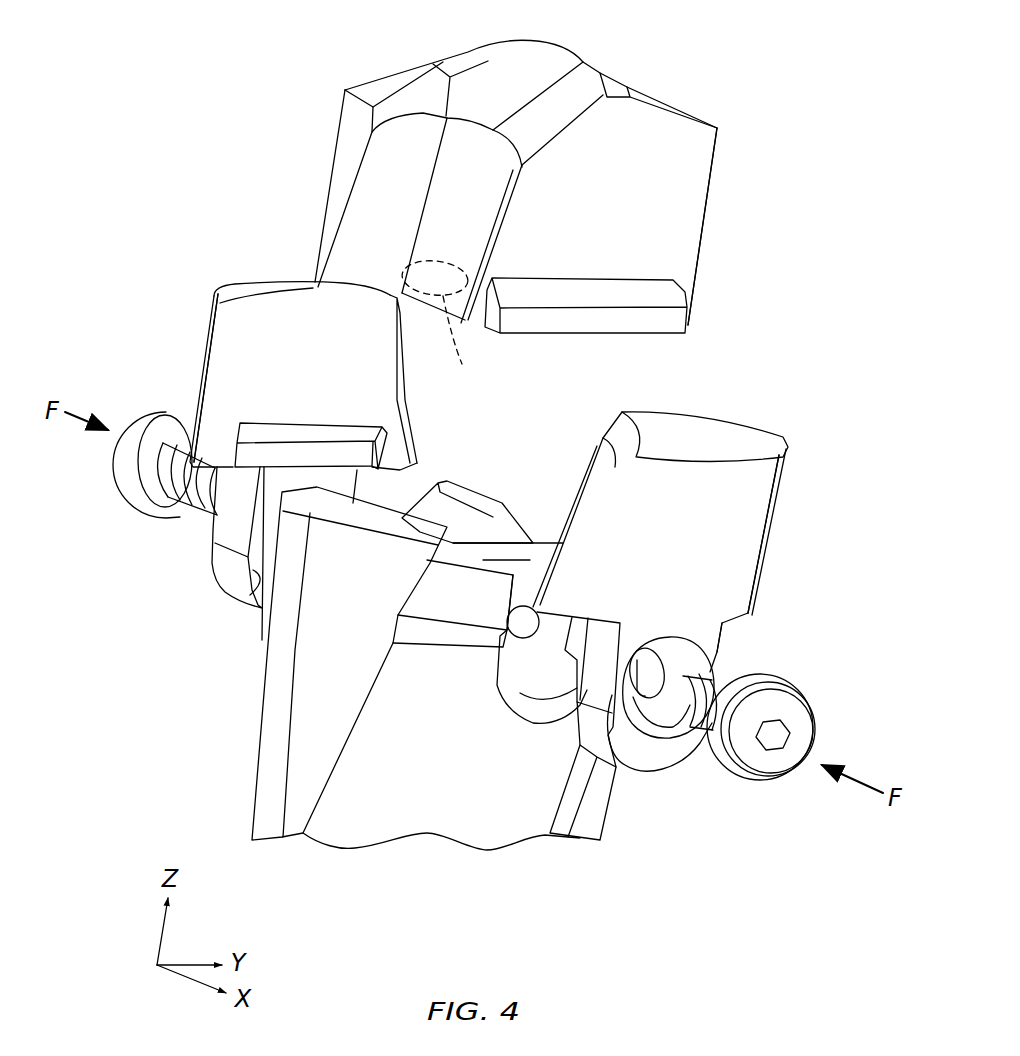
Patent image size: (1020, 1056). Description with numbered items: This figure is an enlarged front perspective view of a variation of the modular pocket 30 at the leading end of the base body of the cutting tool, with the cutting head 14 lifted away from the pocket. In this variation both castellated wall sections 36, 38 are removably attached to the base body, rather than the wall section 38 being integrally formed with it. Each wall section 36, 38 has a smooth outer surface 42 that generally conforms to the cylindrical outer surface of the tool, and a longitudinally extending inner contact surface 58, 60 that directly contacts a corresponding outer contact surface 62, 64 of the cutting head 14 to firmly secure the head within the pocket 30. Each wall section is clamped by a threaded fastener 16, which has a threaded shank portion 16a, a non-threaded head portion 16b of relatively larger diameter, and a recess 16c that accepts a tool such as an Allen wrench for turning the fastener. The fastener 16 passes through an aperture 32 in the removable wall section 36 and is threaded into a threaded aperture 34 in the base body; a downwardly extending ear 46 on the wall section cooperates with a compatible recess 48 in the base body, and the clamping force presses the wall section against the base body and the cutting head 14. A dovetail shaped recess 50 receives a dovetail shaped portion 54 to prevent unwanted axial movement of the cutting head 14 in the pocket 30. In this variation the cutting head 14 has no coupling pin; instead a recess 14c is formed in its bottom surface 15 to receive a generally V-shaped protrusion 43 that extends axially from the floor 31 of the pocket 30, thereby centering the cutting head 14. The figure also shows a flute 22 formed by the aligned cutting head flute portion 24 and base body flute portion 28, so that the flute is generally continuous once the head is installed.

The cutting head 14 is at (300, 150).
The recess 14c is at (462, 364).
The bottom surface 15 is at (408, 297).
The threaded fastener 16 is at (120, 410).
The threaded shank portion 16a is at (217, 473).
The non-threaded head portion 16b is at (132, 503).
The recess 16c is at (792, 735).
The flute 22 is at (318, 667).
The cutting head flute portion 24 is at (385, 222).
The base body flute portion 28 is at (310, 707).
The modular pocket 30 is at (598, 392).
The floor 31 is at (546, 548).
The aperture 32 is at (728, 655).
The threaded aperture 34 is at (526, 642).
The removable wall section 36 is at (782, 545).
The wall section 38 is at (196, 298).
The smooth outer surface 42 is at (740, 498).
The protrusion 43 is at (495, 528).
The ear 46 is at (255, 597).
The recess 48 is at (540, 717).
The dovetail shaped recess 50 is at (255, 433).
The dovetail shaped portion 54 is at (657, 298).
The inner contact surface 58 is at (607, 428).
The inner contact surface 60 is at (263, 335).
The outer contact surface 62 is at (658, 175).
The outer contact surface 64 is at (383, 92).